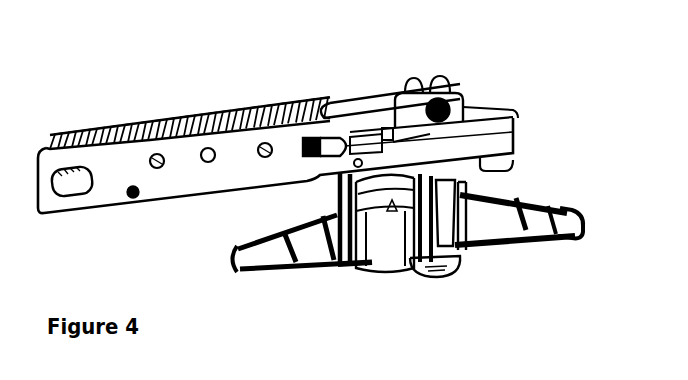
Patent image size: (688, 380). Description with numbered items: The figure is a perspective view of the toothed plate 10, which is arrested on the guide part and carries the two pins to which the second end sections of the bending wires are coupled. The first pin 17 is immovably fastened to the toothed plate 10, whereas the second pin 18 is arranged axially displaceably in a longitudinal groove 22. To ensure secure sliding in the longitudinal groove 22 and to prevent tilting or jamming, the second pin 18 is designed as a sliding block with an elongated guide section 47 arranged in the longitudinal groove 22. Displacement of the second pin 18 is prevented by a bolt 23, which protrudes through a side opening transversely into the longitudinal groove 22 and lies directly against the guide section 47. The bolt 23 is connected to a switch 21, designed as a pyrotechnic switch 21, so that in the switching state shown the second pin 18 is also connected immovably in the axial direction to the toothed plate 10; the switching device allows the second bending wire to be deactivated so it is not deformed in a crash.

The toothed plate 10 is at (178, 112).
The first pin 17 is at (68, 180).
The second pin 18 is at (305, 125).
The guide section 47 is at (360, 140).
The bolt 23 is at (387, 130).
The longitudinal groove 22 is at (490, 112).
The switch 21 is at (393, 212).